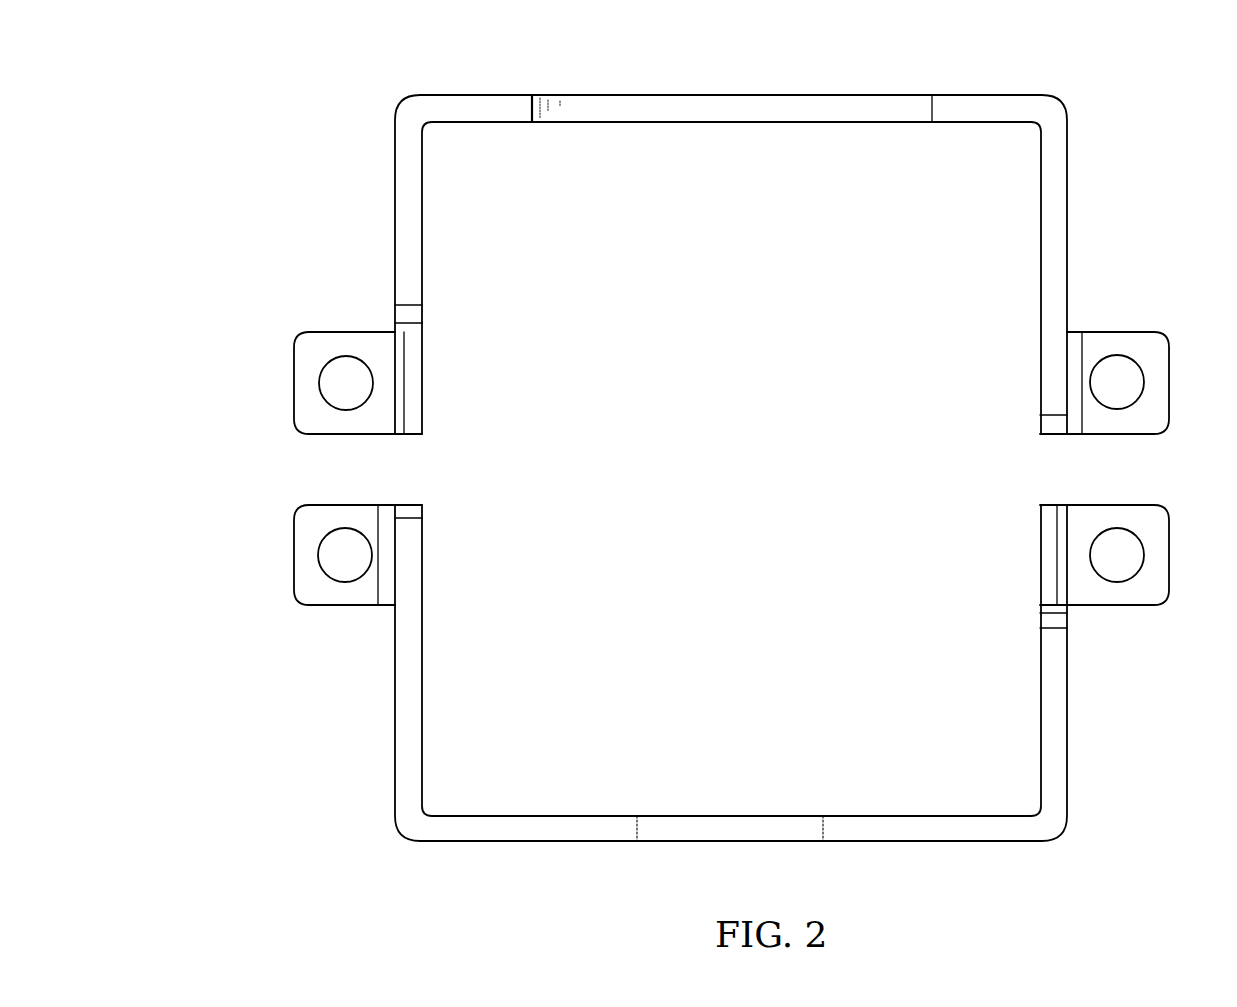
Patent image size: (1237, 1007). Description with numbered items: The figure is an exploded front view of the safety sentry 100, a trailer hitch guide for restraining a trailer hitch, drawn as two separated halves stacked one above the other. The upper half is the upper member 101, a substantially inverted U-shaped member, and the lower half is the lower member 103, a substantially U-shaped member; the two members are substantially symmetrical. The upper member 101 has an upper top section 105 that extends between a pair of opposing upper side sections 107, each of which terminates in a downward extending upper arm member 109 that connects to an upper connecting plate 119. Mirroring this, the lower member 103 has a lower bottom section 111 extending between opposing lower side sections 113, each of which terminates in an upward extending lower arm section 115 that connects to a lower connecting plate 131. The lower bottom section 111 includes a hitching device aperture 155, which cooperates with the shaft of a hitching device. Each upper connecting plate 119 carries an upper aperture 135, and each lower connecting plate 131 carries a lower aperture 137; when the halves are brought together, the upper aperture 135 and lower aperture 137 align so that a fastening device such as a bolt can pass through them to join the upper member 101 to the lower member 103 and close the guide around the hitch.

The safety sentry 100 is at (240, 163).
The upper member 101 is at (666, 93).
The lower member 103 is at (589, 841).
The upper top section 105 is at (841, 94).
The upper side sections 107 is at (394, 204).
The upper arm member 109 is at (1046, 398).
The lower bottom section 111 is at (922, 845).
The lower side section 113 is at (394, 728).
The lower arm section 115 is at (1047, 542).
The upper connecting plate 119 is at (332, 340).
The lower connecting plate 131 is at (330, 596).
The upper aperture 135 is at (321, 372).
The lower aperture 137 is at (320, 560).
The hitching device aperture 155 is at (733, 828).